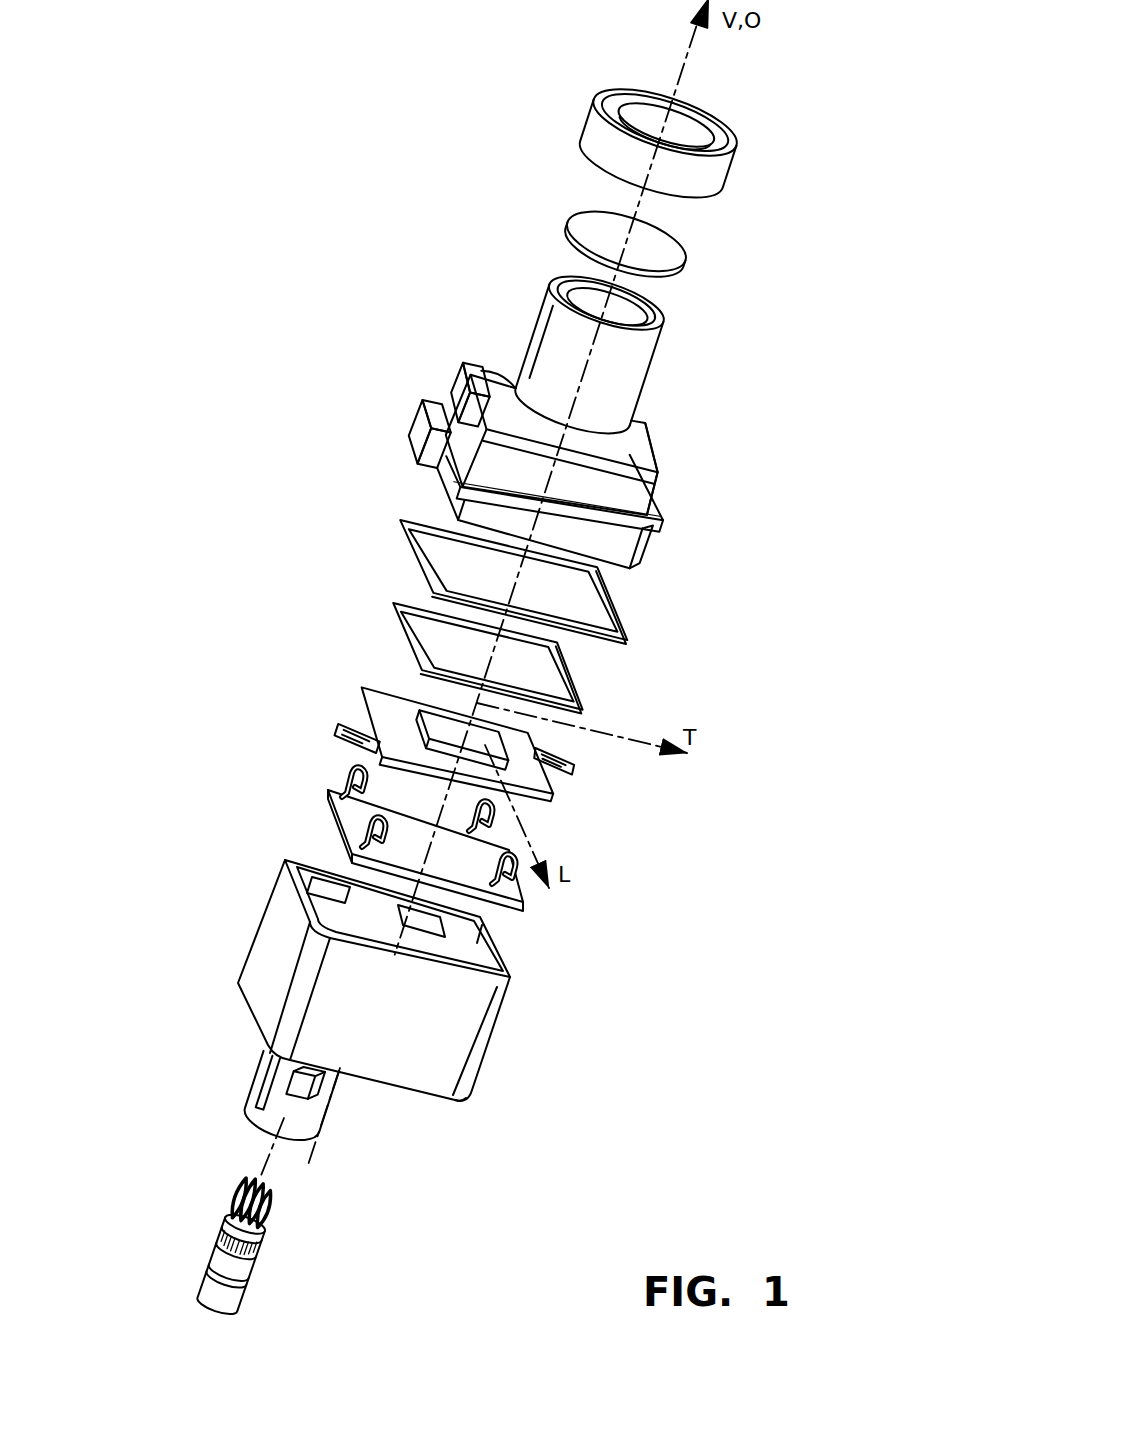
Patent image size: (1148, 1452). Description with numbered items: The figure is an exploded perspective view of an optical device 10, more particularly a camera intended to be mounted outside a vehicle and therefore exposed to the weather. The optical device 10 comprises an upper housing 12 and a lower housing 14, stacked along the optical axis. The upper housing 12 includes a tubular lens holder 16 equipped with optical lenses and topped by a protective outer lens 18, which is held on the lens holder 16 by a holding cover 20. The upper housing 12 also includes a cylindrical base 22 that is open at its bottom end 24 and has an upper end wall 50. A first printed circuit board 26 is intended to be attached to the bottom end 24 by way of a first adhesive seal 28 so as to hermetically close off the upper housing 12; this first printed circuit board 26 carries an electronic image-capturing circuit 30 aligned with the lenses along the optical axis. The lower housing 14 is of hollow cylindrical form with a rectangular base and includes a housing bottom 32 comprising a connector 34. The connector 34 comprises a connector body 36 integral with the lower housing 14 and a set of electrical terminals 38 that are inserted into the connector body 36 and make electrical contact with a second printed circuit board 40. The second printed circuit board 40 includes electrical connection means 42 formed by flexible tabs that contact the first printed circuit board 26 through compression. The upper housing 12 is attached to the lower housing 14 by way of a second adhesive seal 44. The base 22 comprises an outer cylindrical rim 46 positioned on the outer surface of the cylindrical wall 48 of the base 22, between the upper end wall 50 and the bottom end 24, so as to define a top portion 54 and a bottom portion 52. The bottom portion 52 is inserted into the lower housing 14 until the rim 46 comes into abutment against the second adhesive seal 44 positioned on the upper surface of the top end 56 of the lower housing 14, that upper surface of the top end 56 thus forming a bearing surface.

The optical device 10 is at (333, 315).
The upper housing 12 is at (560, 455).
The lower housing 14 is at (393, 992).
The tubular lens holder 16 is at (681, 338).
The protective outer lens 18 is at (690, 239).
The holding cover 20 is at (750, 131).
The cylindrical base 22 is at (668, 494).
The bottom end 24 is at (633, 575).
The first printed circuit board 26 is at (419, 733).
The first adhesive seal 28 is at (589, 686).
The electronic image-capturing circuit 30 is at (425, 710).
The housing bottom 32 is at (446, 1107).
The connector 34 is at (231, 1193).
The connector body 36 is at (253, 1080).
The set of electrical terminals 38 is at (270, 1249).
The second printed circuit board 40 is at (424, 850).
The electrical connection means 42 is at (525, 872).
The second adhesive seal 44 is at (397, 527).
The outer cylindrical rim 46 is at (432, 430).
The cylindrical wall 48 is at (473, 390).
The upper end wall 50 is at (503, 367).
The bottom portion 52 is at (659, 552).
The top portion 54 is at (664, 469).
The top end 56 is at (285, 861).